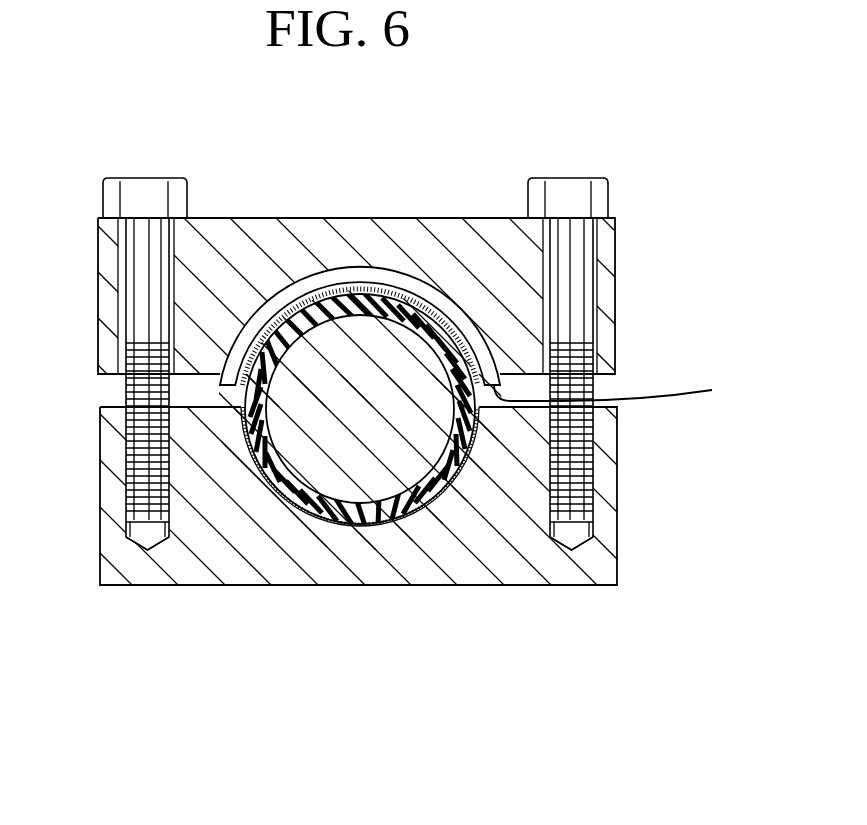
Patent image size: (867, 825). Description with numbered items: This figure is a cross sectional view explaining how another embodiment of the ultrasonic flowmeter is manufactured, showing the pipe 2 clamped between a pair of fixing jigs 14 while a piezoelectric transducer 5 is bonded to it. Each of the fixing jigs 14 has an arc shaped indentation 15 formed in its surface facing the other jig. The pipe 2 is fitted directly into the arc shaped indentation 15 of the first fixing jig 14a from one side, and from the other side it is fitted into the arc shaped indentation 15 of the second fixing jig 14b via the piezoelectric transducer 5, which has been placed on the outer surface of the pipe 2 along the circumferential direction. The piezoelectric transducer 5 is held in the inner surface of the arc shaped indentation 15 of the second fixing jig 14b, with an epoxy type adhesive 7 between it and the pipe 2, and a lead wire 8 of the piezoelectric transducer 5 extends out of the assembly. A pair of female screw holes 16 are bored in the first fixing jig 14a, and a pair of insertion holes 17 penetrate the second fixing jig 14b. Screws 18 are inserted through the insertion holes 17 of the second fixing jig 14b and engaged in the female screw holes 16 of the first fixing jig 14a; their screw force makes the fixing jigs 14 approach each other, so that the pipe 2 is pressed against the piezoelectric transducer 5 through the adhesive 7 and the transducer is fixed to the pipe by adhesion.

The pipe 2 is at (267, 420).
The piezoelectric transducer 5 is at (286, 292).
The adhesive 7 is at (430, 333).
The lead wire 8 is at (668, 405).
The fixing jigs 14 is at (433, 399).
The first fixing jig 14a is at (414, 588).
The second fixing jig 14b is at (458, 218).
The arc shaped indentation 15 is at (359, 267).
The female screw holes 16 is at (142, 552).
The insertion holes 17 is at (123, 263).
The screws 18 is at (175, 187).